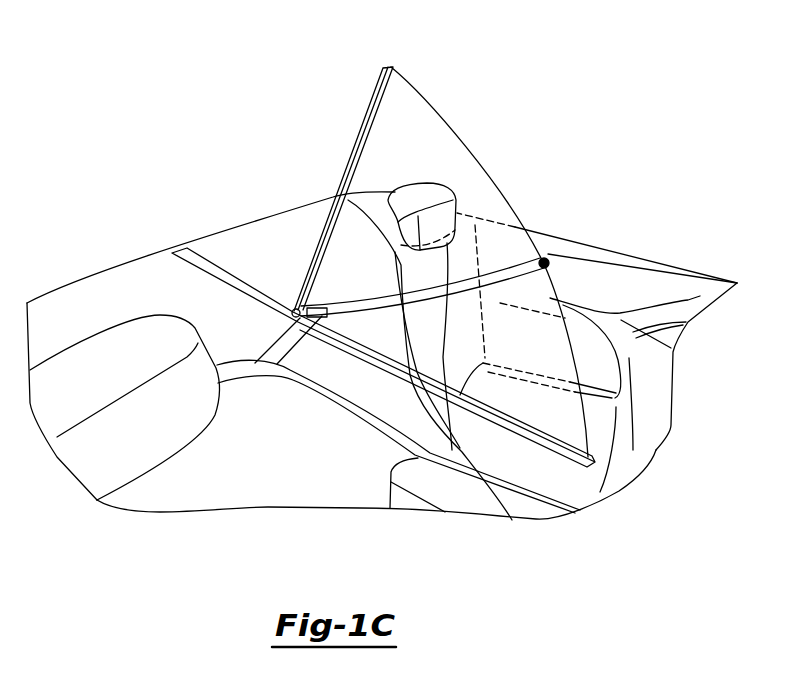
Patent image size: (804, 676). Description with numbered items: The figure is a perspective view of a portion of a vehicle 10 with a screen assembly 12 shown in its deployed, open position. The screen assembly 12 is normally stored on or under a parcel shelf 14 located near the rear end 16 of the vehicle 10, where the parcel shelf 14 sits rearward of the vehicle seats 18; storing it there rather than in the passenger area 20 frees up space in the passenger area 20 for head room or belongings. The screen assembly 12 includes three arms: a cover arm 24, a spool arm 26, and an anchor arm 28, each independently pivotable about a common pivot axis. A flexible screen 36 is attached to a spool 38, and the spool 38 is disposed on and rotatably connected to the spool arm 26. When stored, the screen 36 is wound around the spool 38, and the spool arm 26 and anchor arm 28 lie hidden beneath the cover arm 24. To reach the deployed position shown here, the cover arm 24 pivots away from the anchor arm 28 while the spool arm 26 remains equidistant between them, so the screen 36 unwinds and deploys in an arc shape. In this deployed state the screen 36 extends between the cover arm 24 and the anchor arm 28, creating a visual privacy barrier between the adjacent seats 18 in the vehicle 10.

The vehicle 10 is at (592, 162).
The screen assembly 12 is at (466, 124).
The parcel shelf 14 is at (150, 278).
The rear end 16 is at (94, 267).
The vehicle seats 18 is at (222, 482).
The passenger area 20 is at (669, 240).
The cover arm 24 is at (575, 452).
The spool arm 26 is at (346, 298).
The anchor arm 28 is at (374, 96).
The flexible screen 36 is at (414, 116).
The spool 38 is at (549, 258).